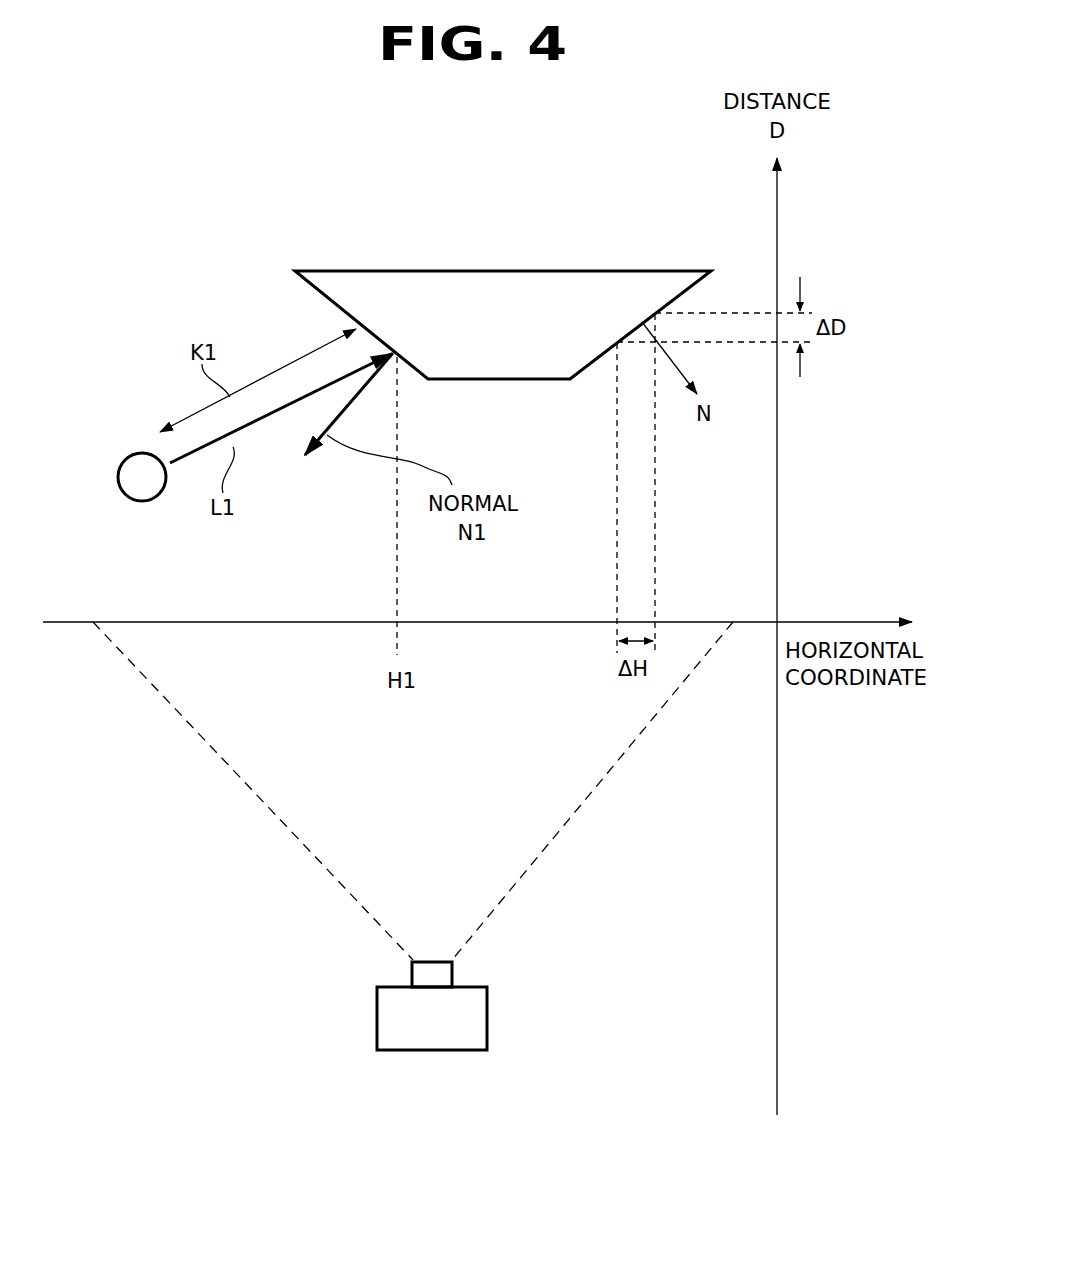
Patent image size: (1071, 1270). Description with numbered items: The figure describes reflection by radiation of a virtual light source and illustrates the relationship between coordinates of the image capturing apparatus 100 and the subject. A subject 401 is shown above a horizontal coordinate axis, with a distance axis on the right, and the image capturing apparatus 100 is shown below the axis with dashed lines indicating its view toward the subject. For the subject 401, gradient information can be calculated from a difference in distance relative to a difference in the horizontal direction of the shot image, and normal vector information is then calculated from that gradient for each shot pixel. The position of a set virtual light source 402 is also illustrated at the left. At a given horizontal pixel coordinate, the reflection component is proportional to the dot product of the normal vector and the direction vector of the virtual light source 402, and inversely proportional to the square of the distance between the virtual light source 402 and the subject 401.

The subject 401 is at (616, 270).
The virtual light source 402 is at (140, 453).
The image capturing apparatus 100 is at (488, 1000).